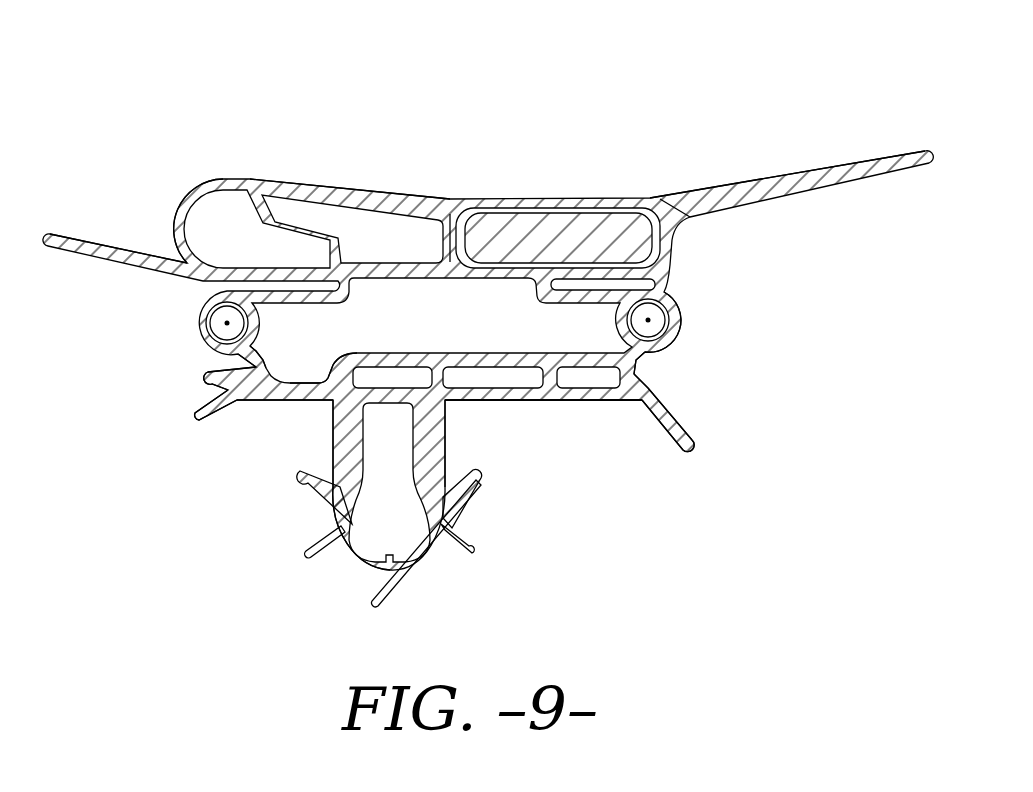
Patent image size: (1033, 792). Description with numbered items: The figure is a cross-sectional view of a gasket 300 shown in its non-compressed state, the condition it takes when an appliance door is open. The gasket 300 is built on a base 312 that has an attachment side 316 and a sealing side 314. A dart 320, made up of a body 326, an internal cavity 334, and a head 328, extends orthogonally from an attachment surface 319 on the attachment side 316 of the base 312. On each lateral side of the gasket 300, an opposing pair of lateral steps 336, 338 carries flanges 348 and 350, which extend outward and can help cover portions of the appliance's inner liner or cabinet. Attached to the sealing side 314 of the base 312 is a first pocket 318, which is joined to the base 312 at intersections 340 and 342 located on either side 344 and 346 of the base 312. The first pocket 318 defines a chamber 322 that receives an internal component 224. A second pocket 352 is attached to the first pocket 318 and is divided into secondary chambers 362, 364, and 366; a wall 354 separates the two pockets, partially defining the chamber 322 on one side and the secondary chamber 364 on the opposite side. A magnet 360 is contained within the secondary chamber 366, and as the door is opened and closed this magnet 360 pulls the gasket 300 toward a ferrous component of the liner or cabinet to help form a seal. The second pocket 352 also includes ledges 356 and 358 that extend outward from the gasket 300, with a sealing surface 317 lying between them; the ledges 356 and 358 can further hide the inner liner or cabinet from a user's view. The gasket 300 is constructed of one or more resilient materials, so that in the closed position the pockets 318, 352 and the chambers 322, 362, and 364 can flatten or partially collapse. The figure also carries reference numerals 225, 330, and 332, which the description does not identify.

The gasket 300 is at (793, 95).
The base 312 is at (600, 403).
The sealing side 314 is at (311, 383).
The attachment side 316 is at (272, 405).
The sealing surface 317 is at (277, 176).
The first pocket 318 is at (687, 330).
The attachment surface 319 is at (574, 412).
The dart 320 is at (276, 564).
The chamber 322 is at (469, 331).
The internal component 224 is at (196, 323).
The retaining wrap 225 is at (208, 298).
The body 326 is at (452, 452).
The head 328 is at (420, 560).
The left barb 330 is at (307, 480).
The right barb 332 is at (483, 483).
The cavity 334 is at (411, 528).
The lateral step 336 is at (247, 380).
The lateral step 338 is at (660, 387).
The intersection 340 is at (253, 360).
The intersection 342 is at (663, 370).
The side 344 is at (220, 428).
The side 346 is at (637, 425).
The flange 348 is at (200, 392).
The flange 350 is at (697, 438).
The second pocket 352 is at (186, 190).
The wall 354 is at (422, 227).
The ledge 356 is at (70, 237).
The ledge 358 is at (843, 162).
The magnet 360 is at (560, 232).
The secondary chamber 362 is at (246, 246).
The secondary chamber 364 is at (396, 254).
The secondary chamber 366 is at (680, 205).